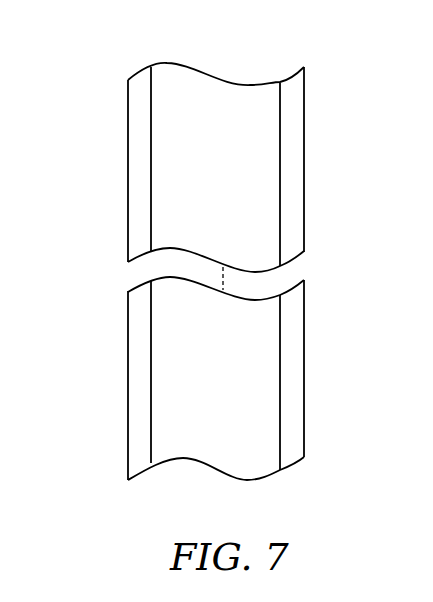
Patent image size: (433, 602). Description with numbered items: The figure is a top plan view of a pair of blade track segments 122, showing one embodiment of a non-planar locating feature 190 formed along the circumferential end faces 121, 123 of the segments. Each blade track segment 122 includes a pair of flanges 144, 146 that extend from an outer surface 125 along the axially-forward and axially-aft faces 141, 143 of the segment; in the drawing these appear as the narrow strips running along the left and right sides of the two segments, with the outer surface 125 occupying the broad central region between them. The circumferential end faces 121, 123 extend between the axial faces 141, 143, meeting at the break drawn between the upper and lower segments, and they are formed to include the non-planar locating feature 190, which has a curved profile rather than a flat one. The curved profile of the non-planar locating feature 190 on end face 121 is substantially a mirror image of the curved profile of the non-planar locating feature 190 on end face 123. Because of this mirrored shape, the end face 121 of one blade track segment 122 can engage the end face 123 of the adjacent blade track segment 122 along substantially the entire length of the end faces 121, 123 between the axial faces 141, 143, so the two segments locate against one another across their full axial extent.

The blade track segment 122 is at (110, 167).
The outer surface 125 is at (222, 110).
The axially-forward face 141 is at (128, 118).
The flange 144 is at (135, 94).
The axially-aft face 143 is at (305, 138).
The flange 146 is at (293, 108).
The non-planar locating feature 190 is at (259, 260).
The circumferential end face 121 is at (292, 280).
The circumferential end face 123 is at (165, 252).